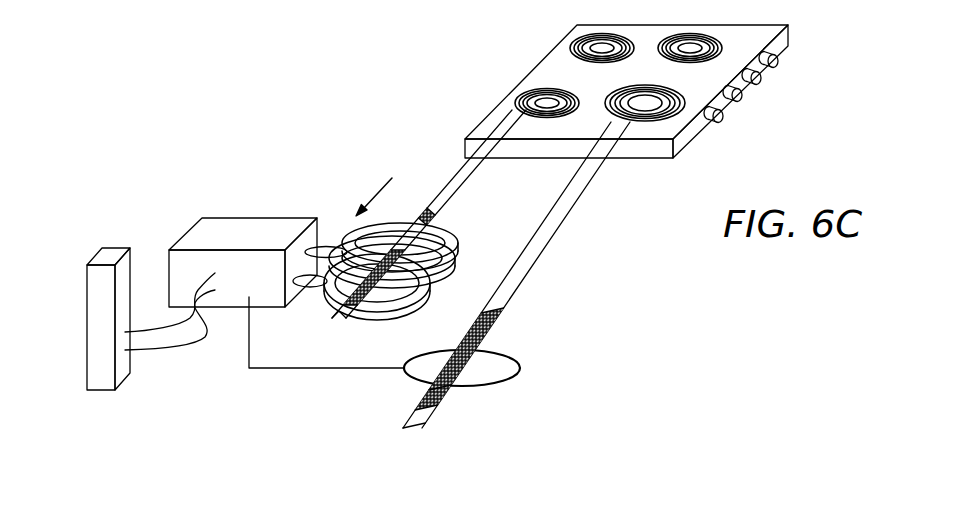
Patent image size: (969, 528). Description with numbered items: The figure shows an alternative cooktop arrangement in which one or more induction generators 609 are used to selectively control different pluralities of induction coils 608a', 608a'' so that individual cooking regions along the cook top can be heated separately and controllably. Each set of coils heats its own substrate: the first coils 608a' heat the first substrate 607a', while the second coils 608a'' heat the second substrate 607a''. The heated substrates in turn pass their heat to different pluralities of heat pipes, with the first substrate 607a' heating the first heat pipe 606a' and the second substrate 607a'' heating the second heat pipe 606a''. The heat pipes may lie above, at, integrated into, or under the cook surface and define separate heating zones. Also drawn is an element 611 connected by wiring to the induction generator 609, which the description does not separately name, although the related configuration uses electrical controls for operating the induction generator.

The heat pipe 606a' is at (429, 214).
The heat pipe 606a'' is at (521, 275).
The substrate 607a' is at (477, 220).
The substrate 607a'' is at (416, 362).
The induction coil 608a' is at (393, 284).
The induction coil 608a'' is at (477, 391).
The induction generator 609 is at (243, 228).
The display unit 611 is at (87, 333).